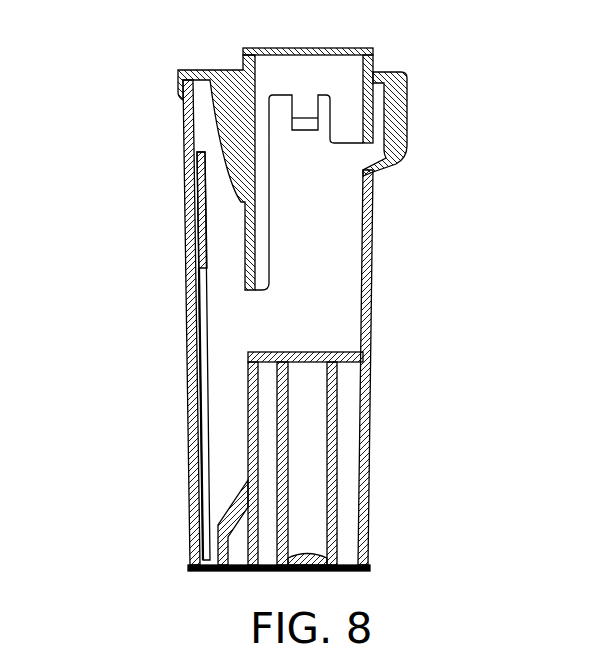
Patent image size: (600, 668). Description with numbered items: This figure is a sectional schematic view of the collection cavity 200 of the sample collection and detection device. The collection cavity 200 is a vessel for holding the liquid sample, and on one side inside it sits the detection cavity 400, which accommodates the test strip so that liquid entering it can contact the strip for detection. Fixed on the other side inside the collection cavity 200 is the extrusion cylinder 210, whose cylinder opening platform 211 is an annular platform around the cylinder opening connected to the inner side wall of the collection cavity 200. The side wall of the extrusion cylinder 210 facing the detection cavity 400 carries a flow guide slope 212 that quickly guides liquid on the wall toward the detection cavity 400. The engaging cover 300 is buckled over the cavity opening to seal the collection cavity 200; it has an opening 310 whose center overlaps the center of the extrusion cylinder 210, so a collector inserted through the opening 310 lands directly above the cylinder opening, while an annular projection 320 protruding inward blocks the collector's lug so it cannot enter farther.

The collection cavity 200 is at (373, 255).
The extrusion cylinder 210 is at (335, 494).
The cylinder opening platform 211 is at (252, 352).
The flow guide slope 212 is at (222, 522).
The engaging cover 300 is at (212, 100).
The opening 310 is at (372, 49).
The annular projection 320 is at (376, 141).
The detection cavity 400 is at (197, 205).